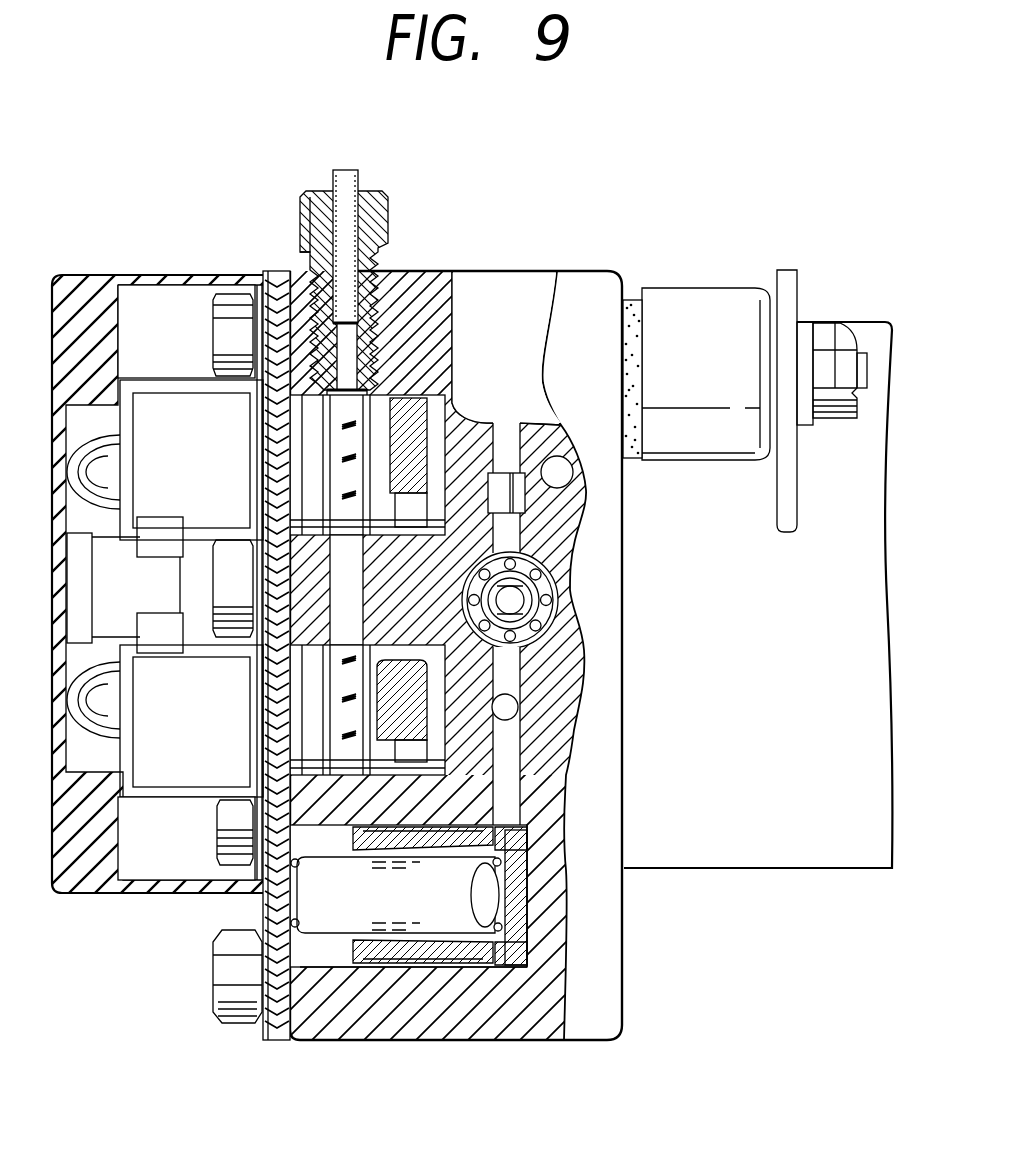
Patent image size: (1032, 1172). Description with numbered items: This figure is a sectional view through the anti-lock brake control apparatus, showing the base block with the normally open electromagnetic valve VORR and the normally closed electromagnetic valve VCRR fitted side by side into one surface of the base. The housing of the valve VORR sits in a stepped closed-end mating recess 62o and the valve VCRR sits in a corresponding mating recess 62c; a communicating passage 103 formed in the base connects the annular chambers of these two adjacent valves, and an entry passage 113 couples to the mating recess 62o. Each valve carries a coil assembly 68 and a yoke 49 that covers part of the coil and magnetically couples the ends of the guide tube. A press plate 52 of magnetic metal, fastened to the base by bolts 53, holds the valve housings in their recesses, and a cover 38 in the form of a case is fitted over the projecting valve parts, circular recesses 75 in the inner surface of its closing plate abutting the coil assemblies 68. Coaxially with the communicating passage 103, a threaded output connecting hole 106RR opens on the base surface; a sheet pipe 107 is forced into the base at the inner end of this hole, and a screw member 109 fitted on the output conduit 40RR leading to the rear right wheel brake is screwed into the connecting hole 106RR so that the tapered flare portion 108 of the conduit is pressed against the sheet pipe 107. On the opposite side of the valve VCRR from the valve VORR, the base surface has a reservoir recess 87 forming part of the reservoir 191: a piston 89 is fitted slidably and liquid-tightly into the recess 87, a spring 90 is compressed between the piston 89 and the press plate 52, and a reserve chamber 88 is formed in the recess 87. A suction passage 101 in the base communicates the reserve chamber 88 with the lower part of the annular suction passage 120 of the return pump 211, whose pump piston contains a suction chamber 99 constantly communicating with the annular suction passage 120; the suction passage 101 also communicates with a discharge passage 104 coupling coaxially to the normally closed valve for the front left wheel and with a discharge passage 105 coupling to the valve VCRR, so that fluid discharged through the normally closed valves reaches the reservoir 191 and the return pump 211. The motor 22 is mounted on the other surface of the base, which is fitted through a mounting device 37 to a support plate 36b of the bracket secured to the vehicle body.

The discharge passage 105 is at (452, 707).
The sheet pipe 107 is at (324, 335).
The tapered flare portion 108 is at (380, 283).
The output connecting hole 106RR is at (392, 232).
The screw member 109 is at (308, 210).
The output conduit 40RR is at (332, 182).
The normally open electromagnetic valve VORR is at (400, 400).
The mating recess 62o is at (392, 388).
The communicating passage 103 is at (352, 568).
The mating recess 62c is at (390, 673).
The entry passage 113 is at (487, 425).
The suction chamber 99 is at (553, 557).
The annular suction passage 120 is at (545, 587).
The return pump 211 is at (567, 620).
The suction passage 101 is at (513, 677).
The discharge passage 104 is at (507, 707).
The normally closed electromagnetic valve VCRR is at (335, 793).
The reserve chamber 88 is at (527, 830).
The reservoir recess 87 is at (337, 950).
The spring 90 is at (493, 950).
The piston 89 is at (522, 897).
The reservoir 191 is at (430, 989).
The press plate 52 is at (277, 997).
The cover 38 is at (130, 912).
The yoke 49 is at (183, 377).
The recess 75 is at (120, 657).
The coil assembly 68 is at (157, 366).
The bolt 53 is at (228, 983).
The mounting device 37 is at (752, 278).
The support plate 36b is at (788, 295).
The motor 22 is at (786, 669).